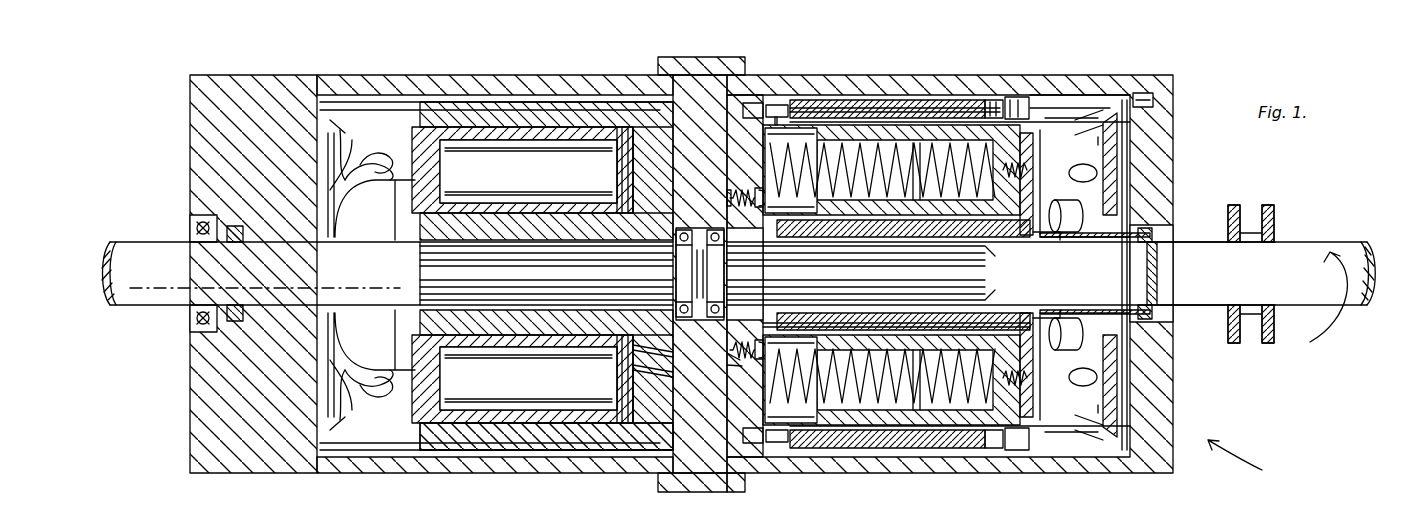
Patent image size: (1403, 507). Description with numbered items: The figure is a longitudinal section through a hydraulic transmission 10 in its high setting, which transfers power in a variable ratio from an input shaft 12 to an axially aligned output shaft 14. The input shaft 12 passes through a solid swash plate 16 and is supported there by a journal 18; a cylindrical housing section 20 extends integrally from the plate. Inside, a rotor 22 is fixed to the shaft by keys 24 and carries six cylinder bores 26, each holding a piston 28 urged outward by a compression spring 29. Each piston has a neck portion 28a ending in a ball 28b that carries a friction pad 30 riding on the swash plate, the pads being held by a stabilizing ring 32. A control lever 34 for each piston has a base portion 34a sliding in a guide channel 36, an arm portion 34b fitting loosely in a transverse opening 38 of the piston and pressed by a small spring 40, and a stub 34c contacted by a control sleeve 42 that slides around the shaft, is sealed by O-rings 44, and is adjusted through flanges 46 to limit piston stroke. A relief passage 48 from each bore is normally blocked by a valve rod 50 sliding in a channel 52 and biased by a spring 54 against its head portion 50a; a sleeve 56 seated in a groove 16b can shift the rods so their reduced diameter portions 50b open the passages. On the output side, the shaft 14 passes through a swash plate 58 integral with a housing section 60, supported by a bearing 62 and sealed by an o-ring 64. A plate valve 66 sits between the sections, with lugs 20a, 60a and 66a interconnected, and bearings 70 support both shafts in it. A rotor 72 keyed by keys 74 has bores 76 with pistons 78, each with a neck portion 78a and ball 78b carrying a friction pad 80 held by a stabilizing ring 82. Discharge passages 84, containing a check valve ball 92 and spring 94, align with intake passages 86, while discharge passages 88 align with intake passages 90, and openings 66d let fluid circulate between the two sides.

The hydraulic transmission 10 is at (1243, 462).
The input shaft 12 is at (1350, 300).
The output shaft 14 is at (140, 238).
The swash plate 16 is at (1165, 128).
The groove 16b is at (1155, 102).
The bearing or journal 18 is at (1155, 235).
The housing section 20 is at (890, 90).
The lug 20a is at (750, 484).
The rotor 22 is at (733, 413).
The keys 24 is at (990, 266).
The cylinder bores 26 is at (770, 150).
The piston 28 is at (912, 138).
The neck portion 28a is at (1072, 170).
The ball 28b is at (1092, 145).
The compression spring 29 is at (880, 200).
The friction pad 30 is at (1115, 172).
The stabilizing ring 32 is at (1072, 200).
The control lever 34 is at (884, 212).
The base portion 34a is at (1024, 310).
The arm portion 34b is at (1070, 318).
The stub 34c is at (1040, 313).
The guide channel 36 is at (775, 325).
The transverse opening 38 is at (1024, 160).
The compression spring 40 is at (1015, 165).
The control sleeve 42 is at (1185, 314).
The O-rings 44 is at (1160, 298).
The flanges 46 is at (1260, 198).
The relief passage 48 is at (777, 108).
The valve rod 50 is at (928, 100).
The head portion 50a is at (1018, 98).
The reduced diameter portion 50b is at (795, 108).
The channel 52 is at (757, 110).
The compression spring 54 is at (990, 100).
The sleeve 56 is at (1068, 95).
The swash plate 58 is at (200, 142).
The housing section 60 is at (430, 82).
The lug 60a is at (660, 478).
The bearing 62 is at (200, 322).
The o-ring 64 is at (233, 318).
The plate valve 66 is at (688, 432).
The lug 66a is at (678, 485).
The openings 66d is at (665, 70).
The bearings 70 is at (682, 318).
The rotor 72 is at (512, 437).
The keys 74 is at (428, 268).
The cylindrical bores 76 is at (622, 166).
The piston 78 is at (458, 215).
The neck portion 78a is at (390, 164).
The ball 78b is at (340, 160).
The friction pad 80 is at (328, 163).
The stabilizing ring 82 is at (330, 330).
The discharge passage 84 is at (725, 356).
The intake passage 86 is at (650, 350).
The discharge passage 88 is at (635, 395).
The intake passage 90 is at (730, 392).
The ball 92 is at (752, 182).
The spring 94 is at (735, 199).